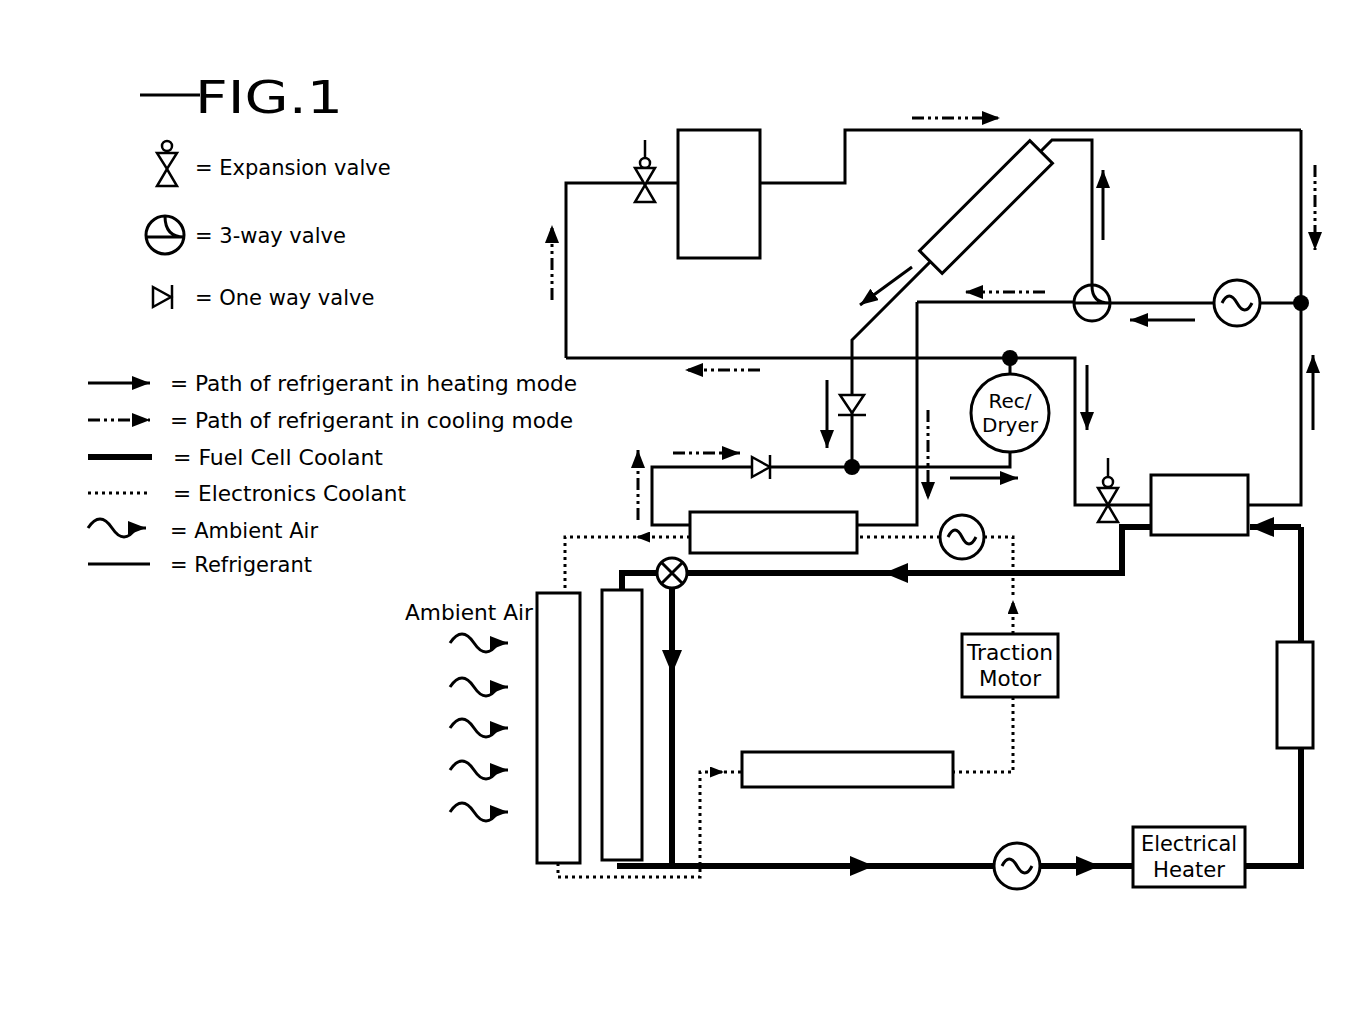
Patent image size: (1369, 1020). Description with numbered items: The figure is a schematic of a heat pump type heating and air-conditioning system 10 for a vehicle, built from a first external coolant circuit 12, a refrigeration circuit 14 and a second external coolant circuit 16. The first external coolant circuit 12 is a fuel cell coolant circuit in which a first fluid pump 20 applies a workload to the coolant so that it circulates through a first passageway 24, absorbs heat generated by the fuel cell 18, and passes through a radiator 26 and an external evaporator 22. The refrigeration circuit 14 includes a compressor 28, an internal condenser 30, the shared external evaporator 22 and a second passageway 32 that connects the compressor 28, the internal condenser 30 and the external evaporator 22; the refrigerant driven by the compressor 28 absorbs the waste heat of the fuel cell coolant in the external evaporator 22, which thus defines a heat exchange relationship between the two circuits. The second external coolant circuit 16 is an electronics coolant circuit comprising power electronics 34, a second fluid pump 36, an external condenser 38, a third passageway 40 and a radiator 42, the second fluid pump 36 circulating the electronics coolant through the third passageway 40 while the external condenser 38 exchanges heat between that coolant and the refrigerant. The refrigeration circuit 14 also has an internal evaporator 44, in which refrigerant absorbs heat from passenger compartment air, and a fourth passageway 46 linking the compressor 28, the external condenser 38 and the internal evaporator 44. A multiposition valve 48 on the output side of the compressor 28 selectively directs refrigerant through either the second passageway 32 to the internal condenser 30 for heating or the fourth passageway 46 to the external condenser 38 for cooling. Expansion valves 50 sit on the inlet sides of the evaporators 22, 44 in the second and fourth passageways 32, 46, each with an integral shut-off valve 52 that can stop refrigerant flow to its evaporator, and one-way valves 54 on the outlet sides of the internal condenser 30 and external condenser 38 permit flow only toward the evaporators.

The heat pump type heating and air-conditioning system 10 is at (1348, 82).
The first external coolant circuit 12 is at (1303, 590).
The refrigeration circuit 14 is at (1306, 156).
The second external coolant circuit 16 is at (575, 877).
The fuel cell 18 is at (1313, 690).
The first fluid pump 20 is at (1020, 889).
The external evaporator 22 is at (1185, 535).
The first passageway 24 is at (1303, 808).
The radiator 26 is at (603, 865).
The compressor 28 is at (1237, 326).
The internal condenser 30 is at (1002, 228).
The second passageway 32 is at (1301, 440).
The power electronics 34 is at (798, 787).
The second fluid pump 36 is at (983, 528).
The external condenser 38 is at (750, 553).
The third passageway 40 is at (565, 537).
The radiator 42 is at (537, 840).
The internal evaporator 44 is at (762, 130).
The fourth passageway 46 is at (862, 128).
The multiposition valve 48 is at (1100, 288).
The expansion valve 50 is at (638, 183).
The shut-off valve 52 is at (650, 160).
The one-way valve 54 is at (866, 378).